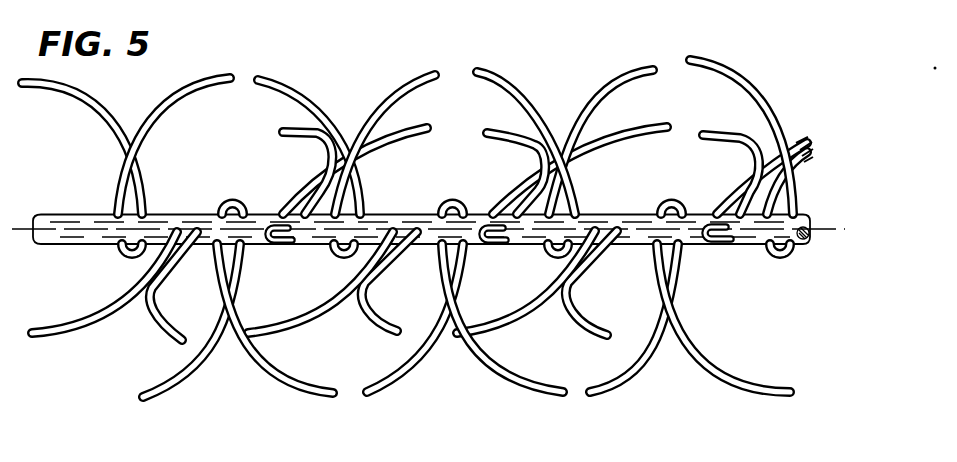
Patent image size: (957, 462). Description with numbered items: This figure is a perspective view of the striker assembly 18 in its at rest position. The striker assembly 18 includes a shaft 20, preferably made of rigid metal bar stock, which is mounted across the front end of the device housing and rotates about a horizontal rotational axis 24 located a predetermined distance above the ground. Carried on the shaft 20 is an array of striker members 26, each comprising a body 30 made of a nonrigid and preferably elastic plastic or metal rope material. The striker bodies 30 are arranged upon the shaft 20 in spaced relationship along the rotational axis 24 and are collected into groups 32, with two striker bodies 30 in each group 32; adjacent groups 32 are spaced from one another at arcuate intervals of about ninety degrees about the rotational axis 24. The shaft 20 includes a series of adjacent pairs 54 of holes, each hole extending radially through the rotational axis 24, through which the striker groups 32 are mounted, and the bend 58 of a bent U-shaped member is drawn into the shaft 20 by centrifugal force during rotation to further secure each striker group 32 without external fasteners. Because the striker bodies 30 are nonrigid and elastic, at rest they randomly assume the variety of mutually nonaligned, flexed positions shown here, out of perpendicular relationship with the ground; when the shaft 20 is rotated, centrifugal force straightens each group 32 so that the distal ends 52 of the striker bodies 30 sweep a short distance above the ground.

The striker assembly 18 is at (640, 47).
The shaft 20 is at (742, 247).
The rotational axis 24 is at (820, 226).
The striker member 26 is at (579, 85).
The striker body 30 is at (82, 89).
The group 32 is at (355, 87).
The distal end 52 is at (259, 78).
The pair of holes 54 is at (682, 205).
The bend 58 is at (785, 258).